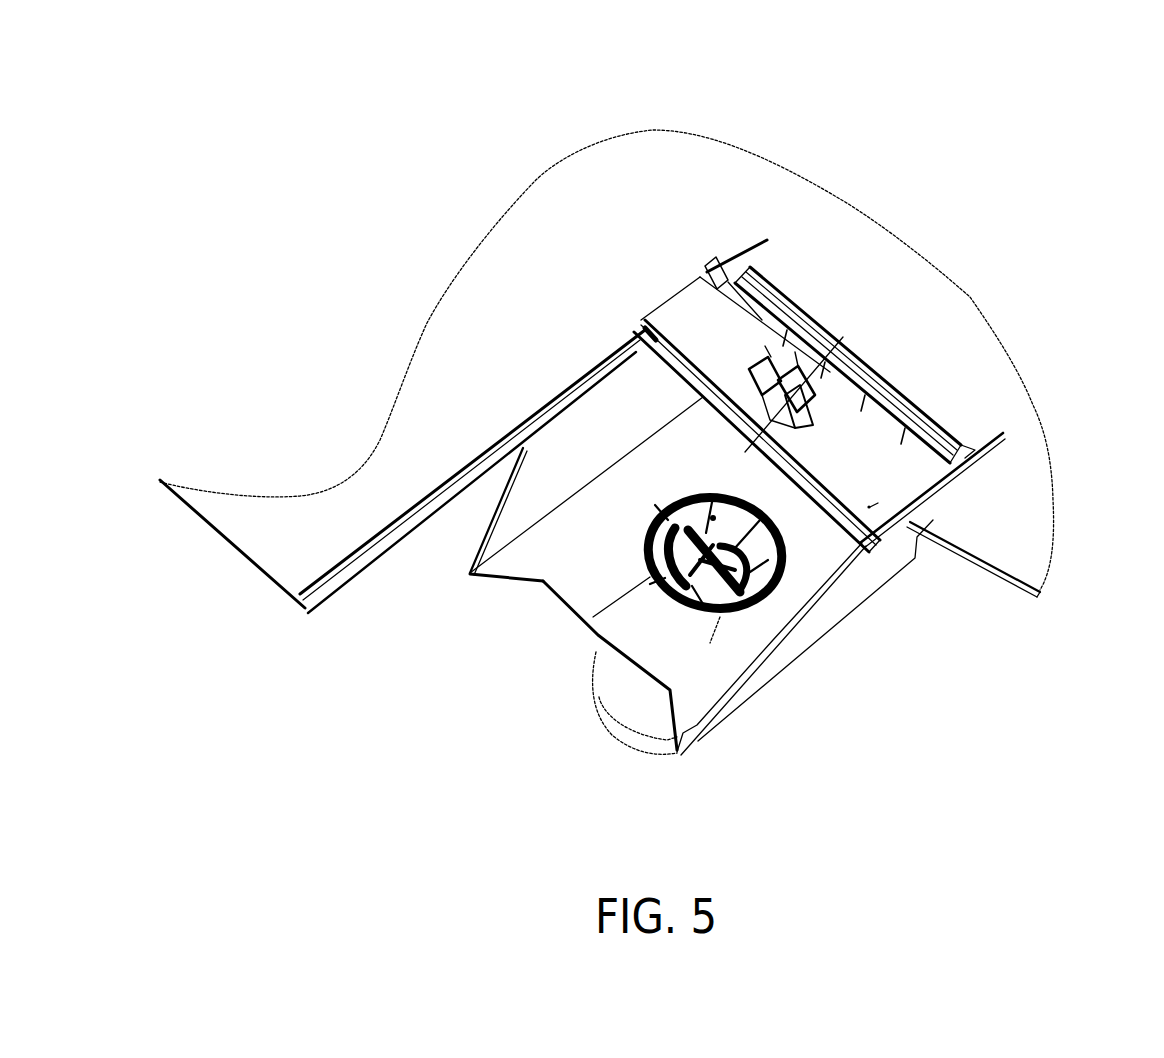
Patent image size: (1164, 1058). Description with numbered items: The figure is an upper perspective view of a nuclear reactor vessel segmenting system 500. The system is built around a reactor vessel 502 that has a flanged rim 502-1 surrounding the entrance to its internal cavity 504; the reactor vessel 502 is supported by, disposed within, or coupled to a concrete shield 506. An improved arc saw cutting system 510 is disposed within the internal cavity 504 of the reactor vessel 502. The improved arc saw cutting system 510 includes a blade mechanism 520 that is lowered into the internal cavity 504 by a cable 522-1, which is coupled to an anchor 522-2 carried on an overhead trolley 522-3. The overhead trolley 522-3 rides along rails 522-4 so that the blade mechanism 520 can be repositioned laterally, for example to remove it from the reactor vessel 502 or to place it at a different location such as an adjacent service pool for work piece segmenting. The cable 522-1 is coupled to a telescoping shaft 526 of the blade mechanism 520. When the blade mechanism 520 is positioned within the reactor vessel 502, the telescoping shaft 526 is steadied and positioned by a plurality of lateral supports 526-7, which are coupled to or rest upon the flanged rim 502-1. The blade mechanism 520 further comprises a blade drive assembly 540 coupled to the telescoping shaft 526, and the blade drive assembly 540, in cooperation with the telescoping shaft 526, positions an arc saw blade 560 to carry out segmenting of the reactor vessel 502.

The nuclear reactor vessel segmenting system 500 is at (302, 26).
The reactor vessel 502 is at (630, 705).
The flanged rim 502-1 is at (590, 625).
The internal cavity 504 is at (690, 493).
The concrete shield 506 is at (703, 680).
The improved arc saw cutting system 510 is at (870, 279).
The blade mechanism 520 is at (747, 613).
The cable 522-1 is at (745, 497).
The anchor 522-2 is at (808, 365).
The overhead trolley 522-3 is at (960, 548).
The rails 522-4 is at (482, 453).
The telescoping shaft 526 is at (663, 500).
The lateral supports 526-7 is at (757, 552).
The blade drive assembly 540 is at (643, 535).
The arc saw blade 560 is at (643, 513).